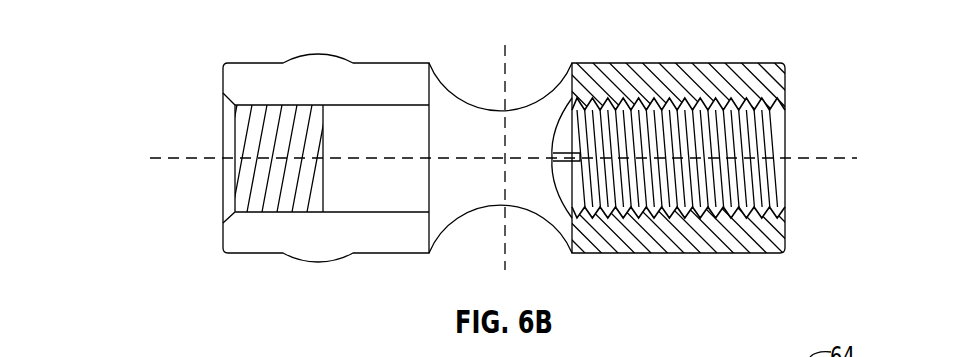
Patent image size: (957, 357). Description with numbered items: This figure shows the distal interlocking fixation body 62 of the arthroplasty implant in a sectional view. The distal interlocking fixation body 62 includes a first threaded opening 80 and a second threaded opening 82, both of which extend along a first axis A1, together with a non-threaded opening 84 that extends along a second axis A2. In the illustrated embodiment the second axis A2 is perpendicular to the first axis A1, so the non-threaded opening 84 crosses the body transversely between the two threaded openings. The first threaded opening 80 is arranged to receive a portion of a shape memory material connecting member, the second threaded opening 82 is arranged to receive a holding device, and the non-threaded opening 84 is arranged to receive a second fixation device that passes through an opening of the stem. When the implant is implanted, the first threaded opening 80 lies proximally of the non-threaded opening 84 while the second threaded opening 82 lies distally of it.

The distal interlocking fixation body 62 is at (723, 42).
The first threaded opening 80 is at (773, 133).
The second threaded opening 82 is at (243, 187).
The non-threaded opening 84 is at (448, 110).
The first axis A1 is at (835, 157).
The second axis A2 is at (508, 68).